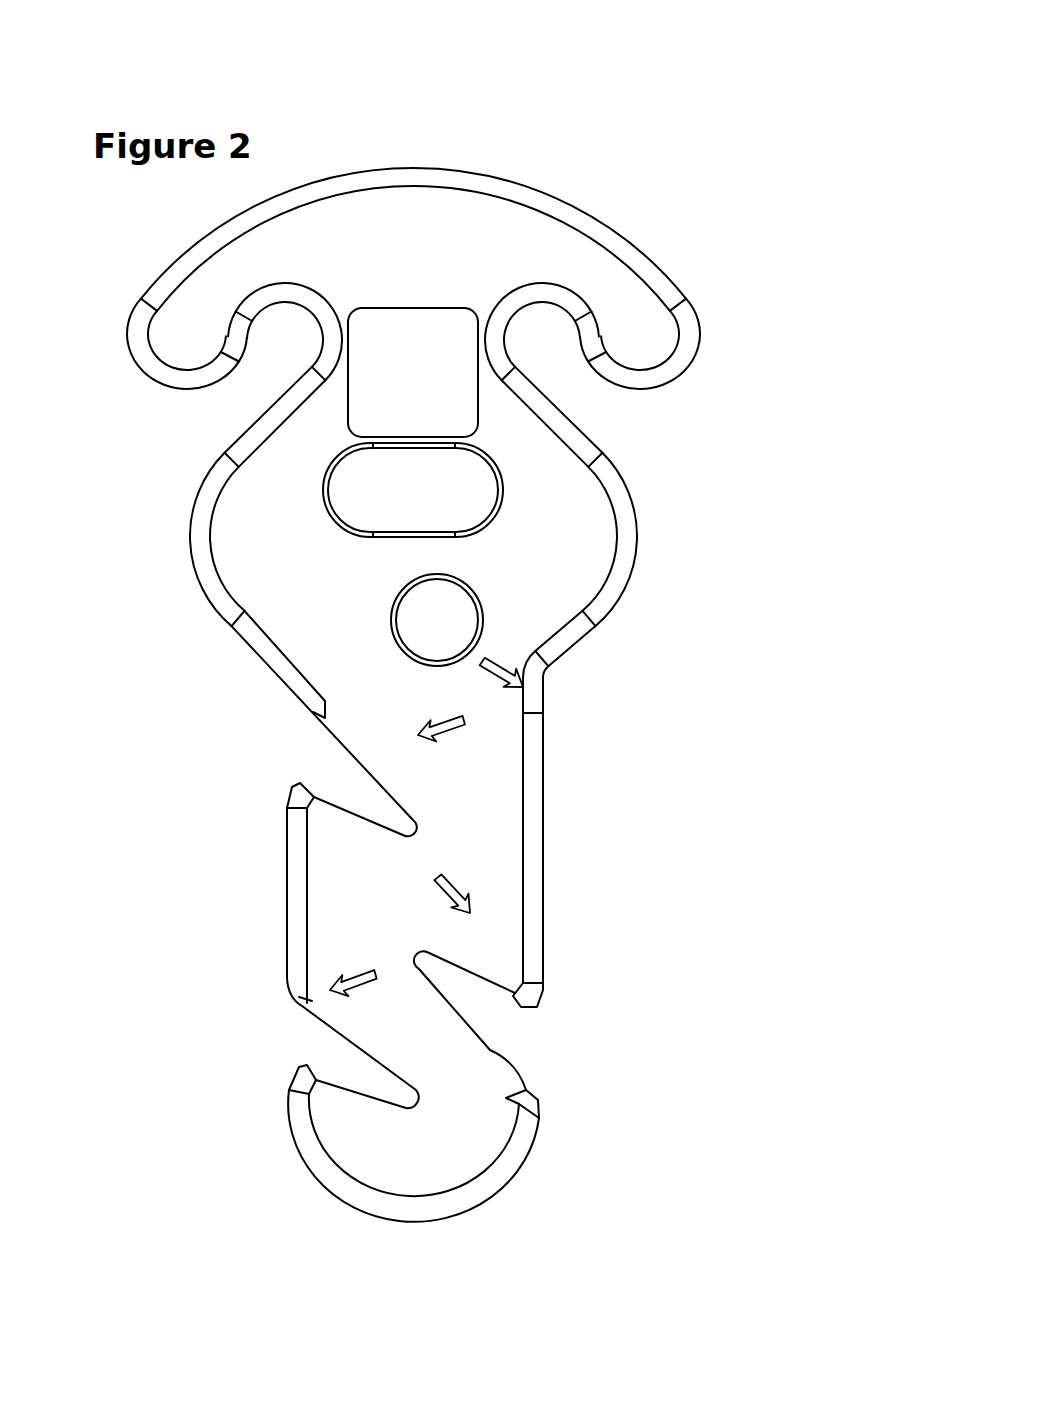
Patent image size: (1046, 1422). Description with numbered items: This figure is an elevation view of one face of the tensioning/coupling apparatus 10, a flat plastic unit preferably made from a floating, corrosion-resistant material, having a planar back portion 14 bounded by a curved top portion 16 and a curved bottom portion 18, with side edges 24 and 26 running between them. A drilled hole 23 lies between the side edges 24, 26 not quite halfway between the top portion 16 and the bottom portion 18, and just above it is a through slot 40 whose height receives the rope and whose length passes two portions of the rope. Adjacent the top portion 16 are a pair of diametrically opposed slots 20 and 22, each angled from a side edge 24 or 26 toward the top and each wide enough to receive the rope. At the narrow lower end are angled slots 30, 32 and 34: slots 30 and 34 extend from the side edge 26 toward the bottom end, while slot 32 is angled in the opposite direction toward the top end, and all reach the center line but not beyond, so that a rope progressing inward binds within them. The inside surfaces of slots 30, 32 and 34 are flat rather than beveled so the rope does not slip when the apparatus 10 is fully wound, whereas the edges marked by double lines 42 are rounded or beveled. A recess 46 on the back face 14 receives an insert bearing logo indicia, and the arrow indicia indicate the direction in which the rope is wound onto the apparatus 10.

The tensioning/coupling apparatus 10 is at (567, 168).
The planar back portion 14 is at (571, 548).
The curved top portion 16 is at (407, 177).
The curved bottom portion 18 is at (418, 1223).
The slot 20 is at (297, 377).
The slot 22 is at (593, 399).
The drilled hole 23 is at (458, 627).
The side edge 24 is at (187, 557).
The side edge 26 is at (613, 620).
The slot 30 is at (360, 764).
The slot 32 is at (478, 1037).
The slot 34 is at (357, 1042).
The through slot 40 is at (436, 450).
The double lines 42 is at (548, 887).
The recess 46 is at (390, 323).